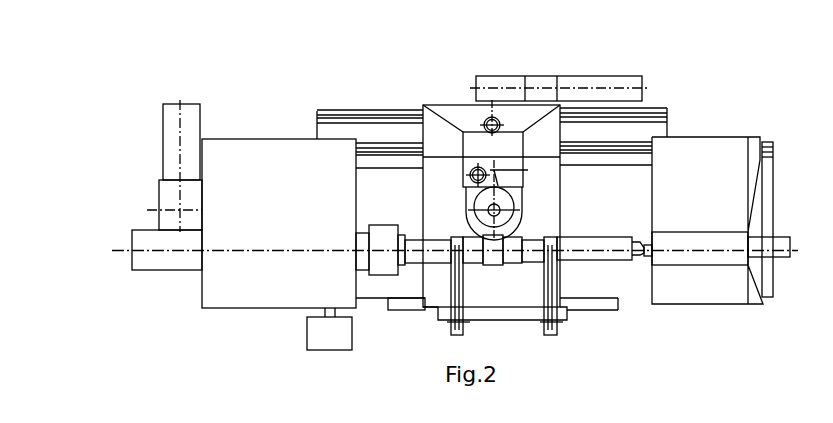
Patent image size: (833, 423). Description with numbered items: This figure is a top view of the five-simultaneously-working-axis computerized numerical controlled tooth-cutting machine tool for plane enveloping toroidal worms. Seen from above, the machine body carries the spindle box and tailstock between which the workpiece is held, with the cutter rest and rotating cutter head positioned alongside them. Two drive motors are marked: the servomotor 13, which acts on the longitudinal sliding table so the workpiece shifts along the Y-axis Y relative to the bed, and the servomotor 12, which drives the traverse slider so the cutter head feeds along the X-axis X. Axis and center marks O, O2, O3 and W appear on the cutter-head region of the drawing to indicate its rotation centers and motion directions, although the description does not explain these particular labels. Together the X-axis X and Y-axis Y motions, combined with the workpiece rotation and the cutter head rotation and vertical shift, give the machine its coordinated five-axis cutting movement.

The servomotor 12 is at (612, 82).
The servomotor 13 is at (173, 112).
The second rotation axis center O2 is at (497, 175).
The third rotation axis center O3 is at (494, 200).
The W axis W is at (481, 220).
The X-axis X is at (507, 220).
The Y-axis Y is at (428, 251).
The workpiece axis center O is at (496, 250).